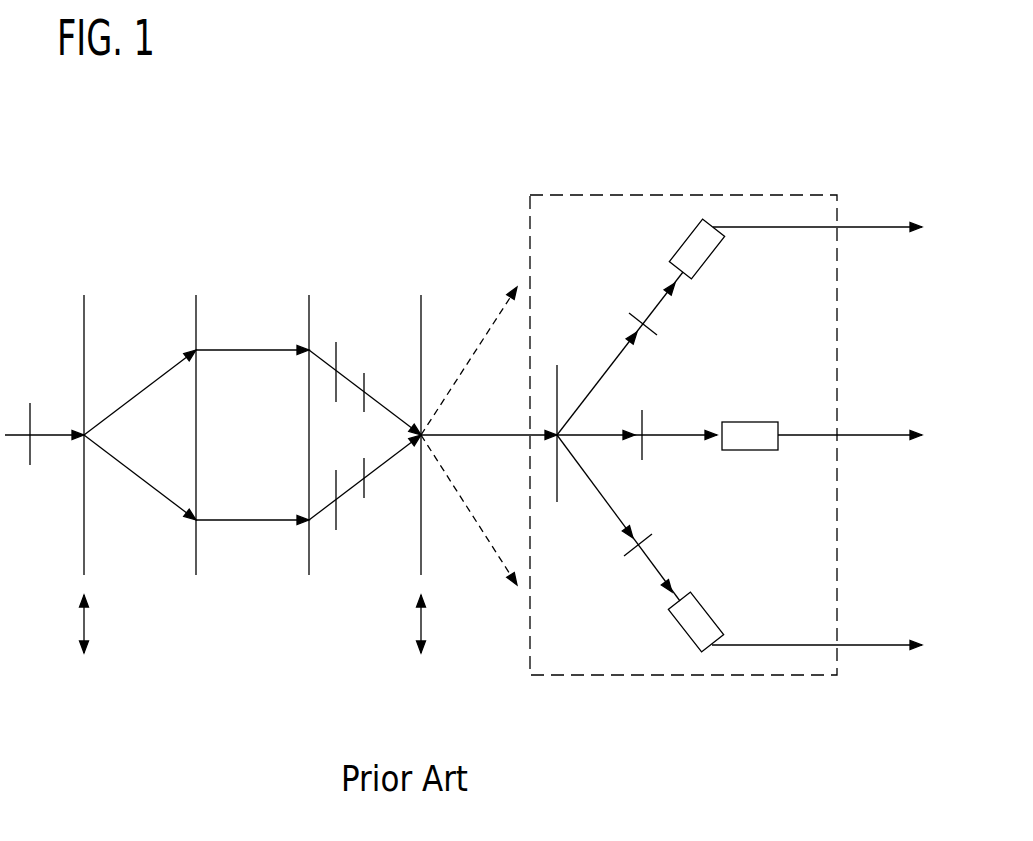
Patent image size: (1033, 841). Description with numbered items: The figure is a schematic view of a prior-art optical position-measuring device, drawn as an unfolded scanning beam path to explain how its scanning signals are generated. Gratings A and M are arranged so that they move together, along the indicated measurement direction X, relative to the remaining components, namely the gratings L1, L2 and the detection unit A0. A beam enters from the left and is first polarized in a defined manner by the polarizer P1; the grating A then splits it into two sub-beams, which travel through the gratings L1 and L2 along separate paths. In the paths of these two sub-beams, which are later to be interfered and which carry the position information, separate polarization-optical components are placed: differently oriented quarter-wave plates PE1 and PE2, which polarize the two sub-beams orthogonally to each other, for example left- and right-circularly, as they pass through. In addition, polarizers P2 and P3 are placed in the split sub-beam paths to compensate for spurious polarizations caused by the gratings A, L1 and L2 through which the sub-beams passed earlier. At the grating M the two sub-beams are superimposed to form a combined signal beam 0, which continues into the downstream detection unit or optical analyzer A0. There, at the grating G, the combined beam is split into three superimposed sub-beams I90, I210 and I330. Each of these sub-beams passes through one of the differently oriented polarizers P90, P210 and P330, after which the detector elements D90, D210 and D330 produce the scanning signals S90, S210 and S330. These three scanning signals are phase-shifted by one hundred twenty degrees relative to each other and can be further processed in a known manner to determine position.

The grating A is at (82, 298).
The grating L1 is at (194, 298).
The grating L2 is at (307, 298).
The grating M is at (419, 298).
The polarizer P1 is at (28, 416).
The polarizer P2 is at (337, 355).
The polarizer P3 is at (338, 517).
The quarter-wave plate PE1 is at (367, 375).
The quarter-wave plate PE2 is at (367, 496).
The measurement direction X is at (87, 627).
The combined signal beam 0 is at (511, 417).
The detection unit A0 is at (610, 192).
The splitting grating G is at (556, 452).
The superimposed sub-beam I90 is at (610, 432).
The superimposed sub-beam I210 is at (592, 384).
The superimposed sub-beam I330 is at (590, 482).
The polarizer P90 is at (642, 452).
The polarizer P210 is at (630, 308).
The polarizer P330 is at (627, 564).
The detector element D90 is at (748, 432).
The detector element D210 is at (693, 250).
The detector element D330 is at (692, 625).
The scanning signal S90 is at (850, 422).
The scanning signal S210 is at (817, 213).
The scanning signal S330 is at (817, 632).